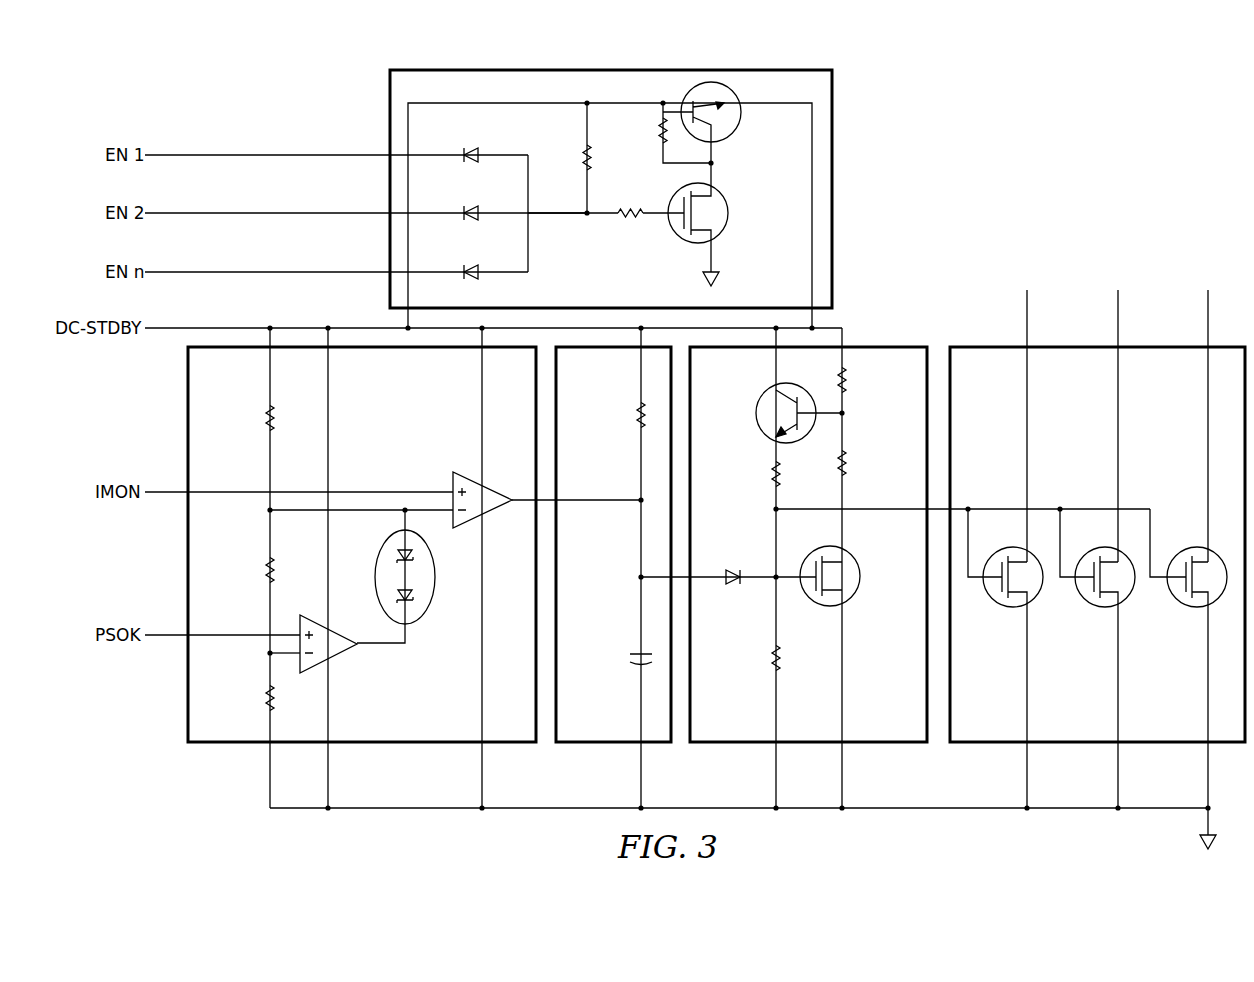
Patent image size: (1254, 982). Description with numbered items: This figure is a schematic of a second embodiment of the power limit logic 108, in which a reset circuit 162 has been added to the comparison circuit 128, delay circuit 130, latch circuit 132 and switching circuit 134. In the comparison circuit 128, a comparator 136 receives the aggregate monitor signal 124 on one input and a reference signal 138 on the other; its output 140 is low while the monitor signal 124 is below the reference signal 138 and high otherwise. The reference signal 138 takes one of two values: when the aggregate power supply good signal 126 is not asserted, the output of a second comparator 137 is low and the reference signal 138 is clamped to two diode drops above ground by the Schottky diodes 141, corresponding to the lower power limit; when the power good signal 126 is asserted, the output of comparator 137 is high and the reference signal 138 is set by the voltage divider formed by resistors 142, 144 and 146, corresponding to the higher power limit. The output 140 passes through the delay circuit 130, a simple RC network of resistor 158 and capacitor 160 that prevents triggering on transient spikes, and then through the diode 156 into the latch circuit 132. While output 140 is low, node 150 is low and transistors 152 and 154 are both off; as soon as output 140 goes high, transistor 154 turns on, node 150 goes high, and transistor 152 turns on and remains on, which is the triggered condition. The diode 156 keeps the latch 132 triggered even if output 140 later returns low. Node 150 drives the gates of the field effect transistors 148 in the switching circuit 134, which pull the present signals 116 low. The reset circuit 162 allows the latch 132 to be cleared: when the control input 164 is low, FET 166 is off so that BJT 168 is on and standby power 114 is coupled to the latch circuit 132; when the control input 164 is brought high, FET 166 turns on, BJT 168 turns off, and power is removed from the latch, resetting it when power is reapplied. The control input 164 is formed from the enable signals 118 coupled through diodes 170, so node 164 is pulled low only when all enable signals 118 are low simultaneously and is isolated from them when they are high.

The power limit logic 108 is at (950, 155).
The standby power 114 is at (186, 326).
The present signals 116 is at (1205, 320).
The enable signals 118 is at (186, 153).
The aggregate monitor signal 124 is at (186, 490).
The aggregate power supply good signal 126 is at (186, 633).
The comparison circuit 128 is at (250, 746).
The delay circuit 130 is at (594, 746).
The latch circuit 132 is at (876, 746).
The switching circuit 134 is at (1152, 746).
The comparator 136 is at (478, 486).
The comparator 137 is at (334, 658).
The reference signal 138 is at (358, 512).
The output of comparator 140 is at (584, 503).
The Schottky diodes 141 is at (416, 624).
The resistor 142 is at (264, 416).
The resistor 144 is at (264, 568).
The resistor 146 is at (264, 702).
The field effect transistors 148 is at (1000, 608).
The node 150 is at (884, 506).
The transistor 152 is at (760, 398).
The transistor 154 is at (857, 590).
The diode 156 is at (734, 568).
The resistor 158 is at (636, 416).
The capacitor 160 is at (626, 659).
The reset circuit 162 is at (388, 112).
The control input 164 is at (556, 216).
The FET 166 is at (727, 228).
The BJT 168 is at (742, 124).
The diodes 170 is at (466, 148).